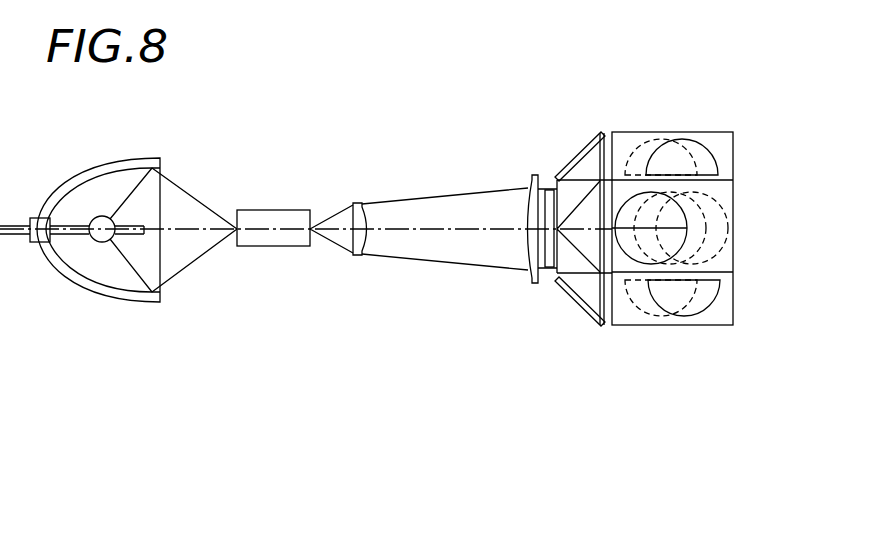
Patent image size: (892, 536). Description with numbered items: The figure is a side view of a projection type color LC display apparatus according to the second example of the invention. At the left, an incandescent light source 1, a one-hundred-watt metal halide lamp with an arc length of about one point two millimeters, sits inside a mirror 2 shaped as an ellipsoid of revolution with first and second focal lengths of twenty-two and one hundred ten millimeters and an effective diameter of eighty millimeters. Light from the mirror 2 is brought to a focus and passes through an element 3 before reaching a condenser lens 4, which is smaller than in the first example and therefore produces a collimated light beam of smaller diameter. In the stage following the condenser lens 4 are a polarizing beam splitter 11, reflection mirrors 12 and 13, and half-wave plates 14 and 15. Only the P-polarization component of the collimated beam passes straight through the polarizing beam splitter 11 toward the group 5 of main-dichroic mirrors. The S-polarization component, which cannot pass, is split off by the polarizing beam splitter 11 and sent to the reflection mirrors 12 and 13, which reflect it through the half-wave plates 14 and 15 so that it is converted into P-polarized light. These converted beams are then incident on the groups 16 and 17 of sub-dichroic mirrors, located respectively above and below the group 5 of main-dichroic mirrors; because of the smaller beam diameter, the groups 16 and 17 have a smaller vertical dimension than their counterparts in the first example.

The incandescent light source 1 is at (87, 215).
The mirror 2 is at (117, 159).
The light integrating element 3 is at (275, 210).
The condenser lens 4 is at (528, 176).
The group of main-dichroic mirrors 5 is at (740, 180).
The polarizing beam splitter 11 is at (547, 268).
The reflection mirror 12 is at (580, 150).
The reflection mirror 13 is at (584, 316).
The λ/2 plate 14 is at (601, 157).
The λ/2 plate 15 is at (605, 296).
The group of sub-dichroic mirrors 16 is at (740, 132).
The group of sub-dichroic mirrors 17 is at (740, 272).